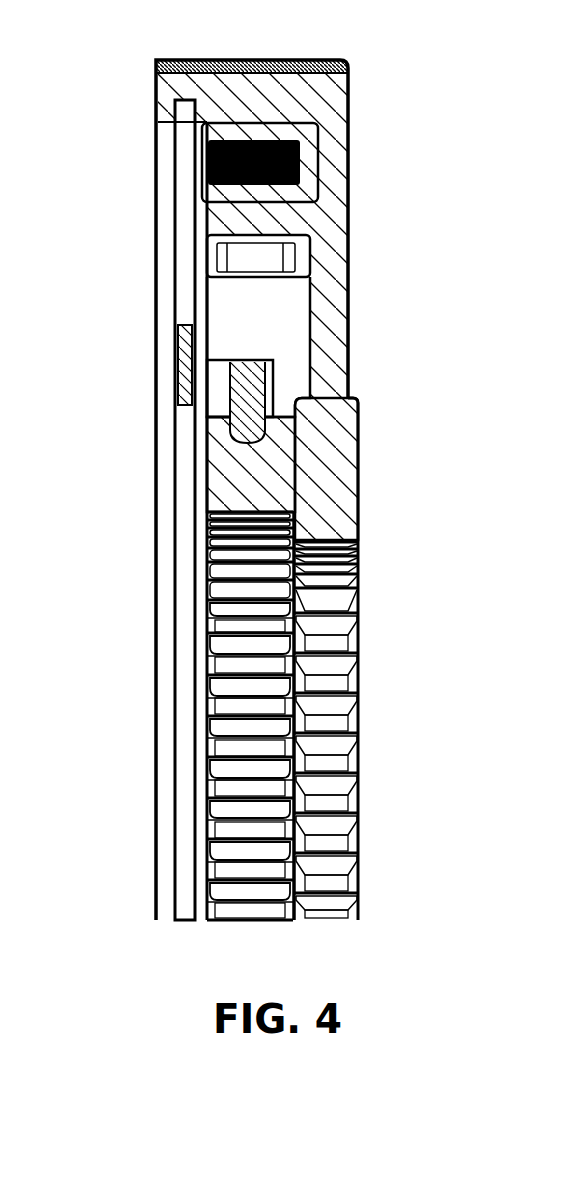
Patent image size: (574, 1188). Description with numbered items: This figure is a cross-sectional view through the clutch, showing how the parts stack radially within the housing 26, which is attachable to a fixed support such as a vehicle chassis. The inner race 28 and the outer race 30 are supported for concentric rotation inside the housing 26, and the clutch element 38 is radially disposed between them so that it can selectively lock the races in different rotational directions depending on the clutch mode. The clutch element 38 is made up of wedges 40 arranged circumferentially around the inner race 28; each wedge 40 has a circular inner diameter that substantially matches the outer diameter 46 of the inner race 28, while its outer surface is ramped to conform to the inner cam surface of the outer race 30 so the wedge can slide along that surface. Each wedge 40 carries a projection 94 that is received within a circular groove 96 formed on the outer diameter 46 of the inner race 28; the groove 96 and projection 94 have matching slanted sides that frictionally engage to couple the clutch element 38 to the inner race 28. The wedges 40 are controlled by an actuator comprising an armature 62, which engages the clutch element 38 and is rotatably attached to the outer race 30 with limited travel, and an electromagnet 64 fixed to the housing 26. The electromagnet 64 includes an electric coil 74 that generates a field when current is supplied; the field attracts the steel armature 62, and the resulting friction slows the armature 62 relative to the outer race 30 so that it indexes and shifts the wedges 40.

The housing 26 is at (268, 107).
The armature 62 is at (175, 140).
The electric coil 74 is at (300, 123).
The electromagnet 64 is at (305, 167).
The outer race 30 is at (258, 327).
The wedge 40 is at (250, 390).
The clutch element 38 is at (178, 342).
The outer diameter 46 is at (283, 413).
The projection 94 is at (255, 497).
The circular groove 96 is at (250, 450).
The inner race 28 is at (360, 575).